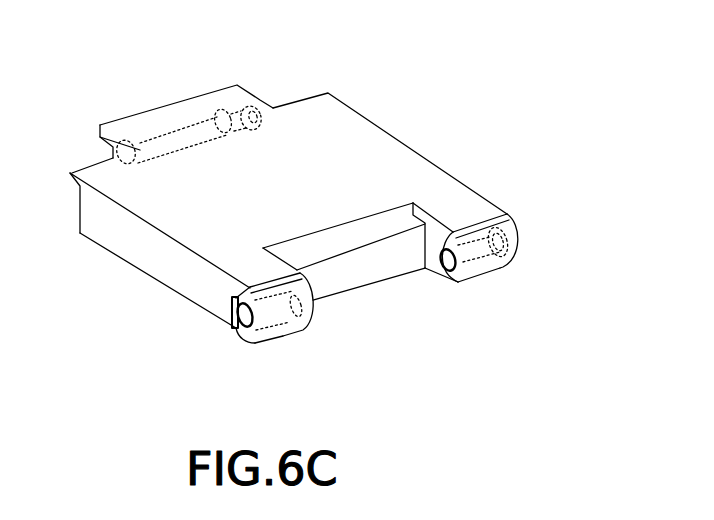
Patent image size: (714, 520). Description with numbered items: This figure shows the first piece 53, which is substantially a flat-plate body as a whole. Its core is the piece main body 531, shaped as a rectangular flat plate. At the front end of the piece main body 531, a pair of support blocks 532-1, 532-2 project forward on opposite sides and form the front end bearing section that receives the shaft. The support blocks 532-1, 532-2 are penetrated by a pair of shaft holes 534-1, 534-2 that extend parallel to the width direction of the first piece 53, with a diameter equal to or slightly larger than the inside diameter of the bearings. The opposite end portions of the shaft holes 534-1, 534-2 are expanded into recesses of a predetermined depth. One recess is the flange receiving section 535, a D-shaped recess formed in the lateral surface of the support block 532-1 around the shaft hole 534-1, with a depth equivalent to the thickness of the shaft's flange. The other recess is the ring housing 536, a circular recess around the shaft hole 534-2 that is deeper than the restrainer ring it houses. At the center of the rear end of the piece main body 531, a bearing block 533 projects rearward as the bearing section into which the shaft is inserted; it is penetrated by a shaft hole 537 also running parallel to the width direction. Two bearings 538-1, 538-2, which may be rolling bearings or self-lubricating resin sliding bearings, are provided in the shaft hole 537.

The first piece 53 is at (461, 119).
The piece main body 531 is at (399, 140).
The support block 532-1 is at (283, 338).
The support block 532-2 is at (496, 272).
The bearing block 533 is at (272, 108).
The shaft hole 534-1 is at (240, 343).
The shaft hole 534-2 is at (444, 272).
The flange receiving section 535 is at (232, 309).
The ring housing 536 is at (518, 243).
The shaft hole 537 is at (112, 157).
The bearing 538-1 is at (127, 130).
The bearing 538-2 is at (217, 112).